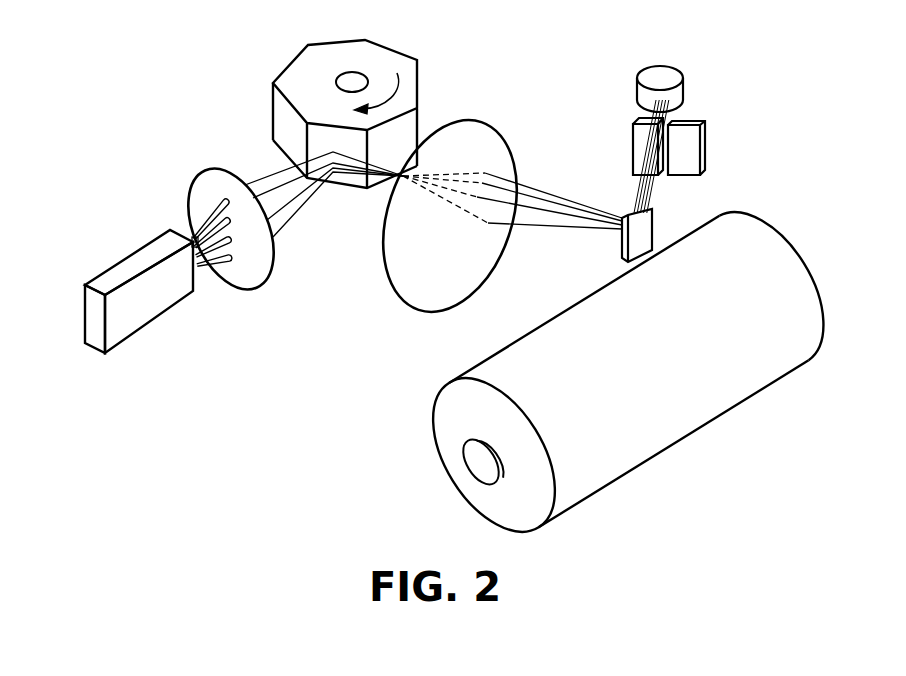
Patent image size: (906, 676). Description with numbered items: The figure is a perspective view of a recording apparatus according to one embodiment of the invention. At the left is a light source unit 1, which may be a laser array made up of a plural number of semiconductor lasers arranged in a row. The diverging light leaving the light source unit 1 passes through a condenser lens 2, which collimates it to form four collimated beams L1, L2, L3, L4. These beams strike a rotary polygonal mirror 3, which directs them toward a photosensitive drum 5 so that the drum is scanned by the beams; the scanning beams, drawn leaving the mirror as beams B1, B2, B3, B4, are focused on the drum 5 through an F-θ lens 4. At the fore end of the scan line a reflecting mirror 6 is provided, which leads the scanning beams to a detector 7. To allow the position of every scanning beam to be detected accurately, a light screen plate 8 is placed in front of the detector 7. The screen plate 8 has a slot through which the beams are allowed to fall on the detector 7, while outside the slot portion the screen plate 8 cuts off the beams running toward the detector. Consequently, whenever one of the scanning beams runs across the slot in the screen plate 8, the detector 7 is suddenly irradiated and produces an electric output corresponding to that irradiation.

The light source unit 1 is at (138, 323).
The condenser lens 2 is at (248, 278).
The rotary polygonal mirror 3 is at (377, 53).
The F-θ lens 4 is at (478, 137).
The photosensitive drum 5 is at (750, 217).
The reflecting mirror 6 is at (648, 230).
The detector 7 is at (663, 73).
The light screen plate 8 is at (632, 135).
The collimated beam L1 is at (284, 224).
The collimated beam L2 is at (297, 200).
The collimated beam L3 is at (263, 192).
The collimated beam L4 is at (275, 173).
The scanning beam B1 is at (532, 187).
The scanning beam B2 is at (547, 198).
The scanning beam B3 is at (535, 209).
The scanning beam B4 is at (575, 233).